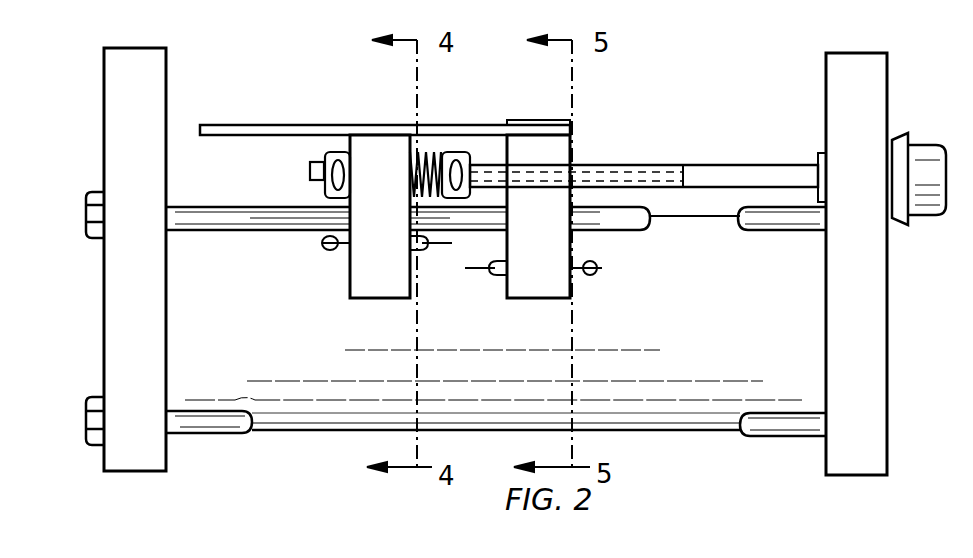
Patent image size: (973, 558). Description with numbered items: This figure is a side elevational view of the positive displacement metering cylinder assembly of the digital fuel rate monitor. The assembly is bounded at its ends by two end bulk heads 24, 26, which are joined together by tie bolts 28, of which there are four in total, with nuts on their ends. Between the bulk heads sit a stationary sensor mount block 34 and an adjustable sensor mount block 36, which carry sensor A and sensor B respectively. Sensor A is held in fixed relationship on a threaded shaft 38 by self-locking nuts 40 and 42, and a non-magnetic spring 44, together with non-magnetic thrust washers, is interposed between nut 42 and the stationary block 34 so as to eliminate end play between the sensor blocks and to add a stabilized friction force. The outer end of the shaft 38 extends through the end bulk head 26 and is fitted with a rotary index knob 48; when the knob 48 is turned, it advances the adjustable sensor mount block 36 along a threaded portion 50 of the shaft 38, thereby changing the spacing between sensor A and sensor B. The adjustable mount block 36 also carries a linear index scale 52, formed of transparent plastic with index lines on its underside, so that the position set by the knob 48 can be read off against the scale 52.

The end bulk head 24 is at (150, 88).
The end bulk head 26 is at (838, 65).
The tie bolts 28 is at (230, 428).
The stationary sensor mount block 34 is at (358, 283).
The adjustable sensor mount block 36 is at (545, 295).
The threaded shaft 38 is at (712, 140).
The self-locking nut 40 is at (338, 152).
The self-locking nut 42 is at (462, 152).
The non-magnetic spring 44 is at (425, 150).
The rotary index knob 48 is at (918, 148).
The threaded portion 50 is at (602, 172).
The linear index scale 52 is at (238, 140).
The sensor A is at (490, 276).
The sensor B is at (318, 248).